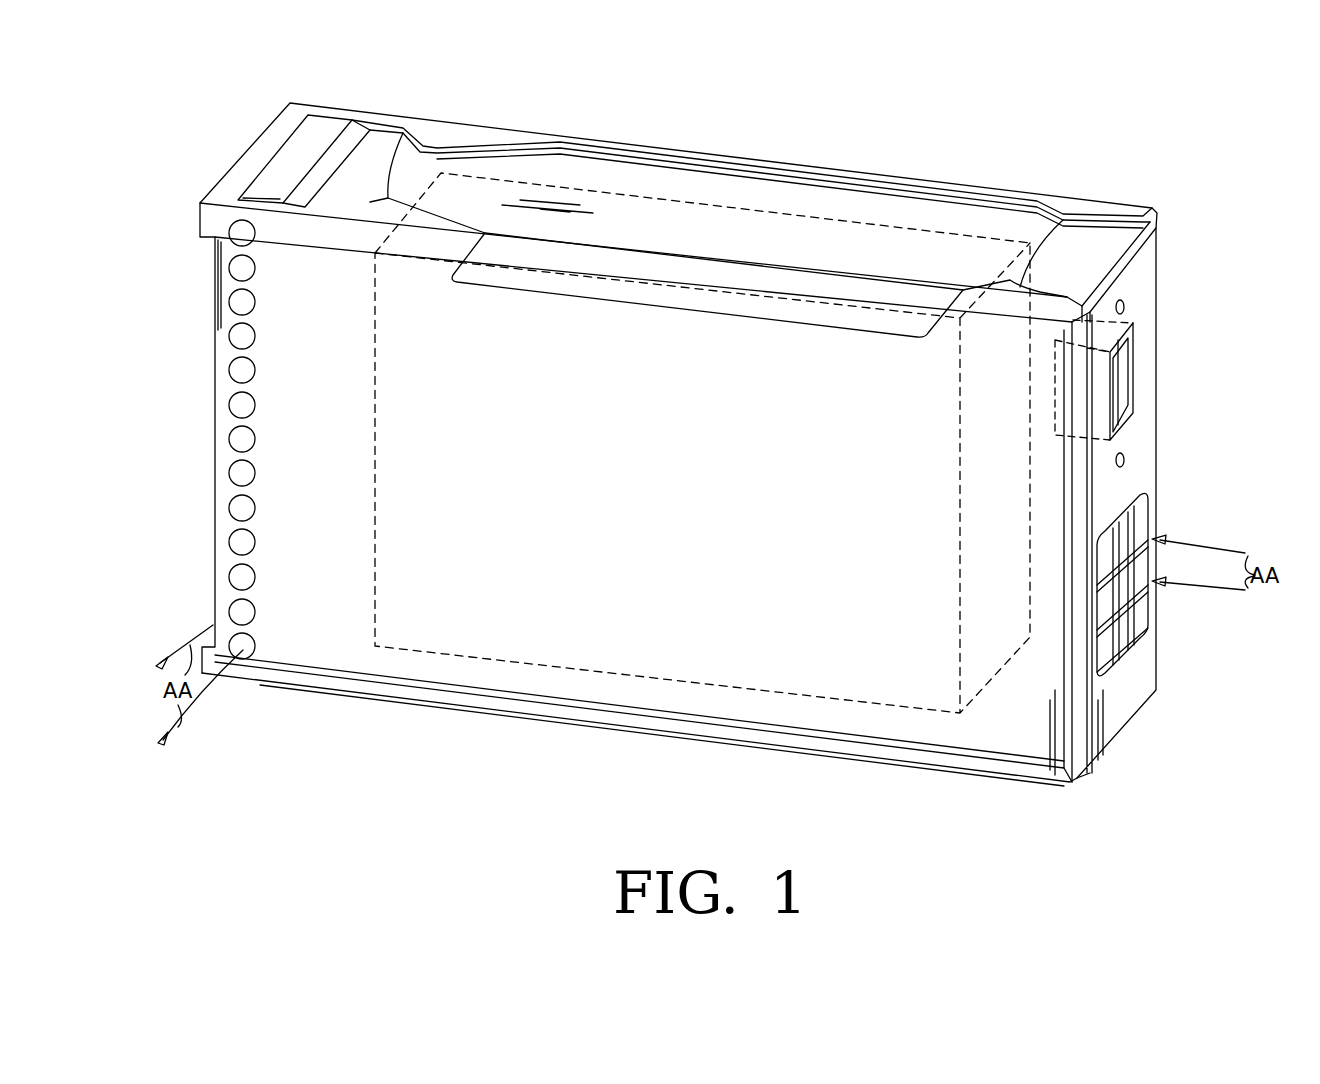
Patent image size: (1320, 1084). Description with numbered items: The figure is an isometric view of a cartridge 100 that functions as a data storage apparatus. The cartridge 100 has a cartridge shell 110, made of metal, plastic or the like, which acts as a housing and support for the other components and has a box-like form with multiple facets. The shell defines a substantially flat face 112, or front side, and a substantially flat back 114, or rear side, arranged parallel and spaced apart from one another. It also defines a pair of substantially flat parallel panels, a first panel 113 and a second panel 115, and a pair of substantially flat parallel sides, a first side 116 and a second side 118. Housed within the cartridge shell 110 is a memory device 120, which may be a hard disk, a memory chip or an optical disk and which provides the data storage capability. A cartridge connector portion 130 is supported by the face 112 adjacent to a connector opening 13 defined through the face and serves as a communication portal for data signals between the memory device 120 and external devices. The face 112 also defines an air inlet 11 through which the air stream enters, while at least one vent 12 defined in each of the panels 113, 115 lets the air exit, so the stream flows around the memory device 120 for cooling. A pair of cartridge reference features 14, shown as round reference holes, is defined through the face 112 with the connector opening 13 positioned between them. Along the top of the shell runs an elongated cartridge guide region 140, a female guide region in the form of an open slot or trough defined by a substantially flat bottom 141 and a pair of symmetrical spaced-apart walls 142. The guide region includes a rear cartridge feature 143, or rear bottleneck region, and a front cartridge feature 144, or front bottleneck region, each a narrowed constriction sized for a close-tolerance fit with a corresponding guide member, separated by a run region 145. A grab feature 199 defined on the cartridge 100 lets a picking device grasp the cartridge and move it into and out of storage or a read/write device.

The cartridge 100 is at (822, 118).
The cartridge shell 110 is at (214, 311).
The air inlet 11 is at (1130, 595).
The vent 12 is at (242, 405).
The connector opening 13 is at (1128, 360).
The cartridge reference features 14 is at (1126, 307).
The face 112 is at (1145, 404).
The first panel 113 is at (318, 655).
The back 114 is at (215, 515).
The second panel 115 is at (1100, 203).
The first side 116 is at (467, 130).
The second side 118 is at (560, 725).
The memory device 120 is at (393, 480).
The cartridge connector portion 130 is at (1113, 393).
The cartridge guide region 140 is at (670, 194).
The bottom 141 is at (862, 207).
The walls 142 is at (830, 183).
The rear cartridge feature 143 is at (392, 196).
The front cartridge feature 144 is at (1017, 280).
The run region 145 is at (690, 314).
The grab feature 199 is at (333, 130).